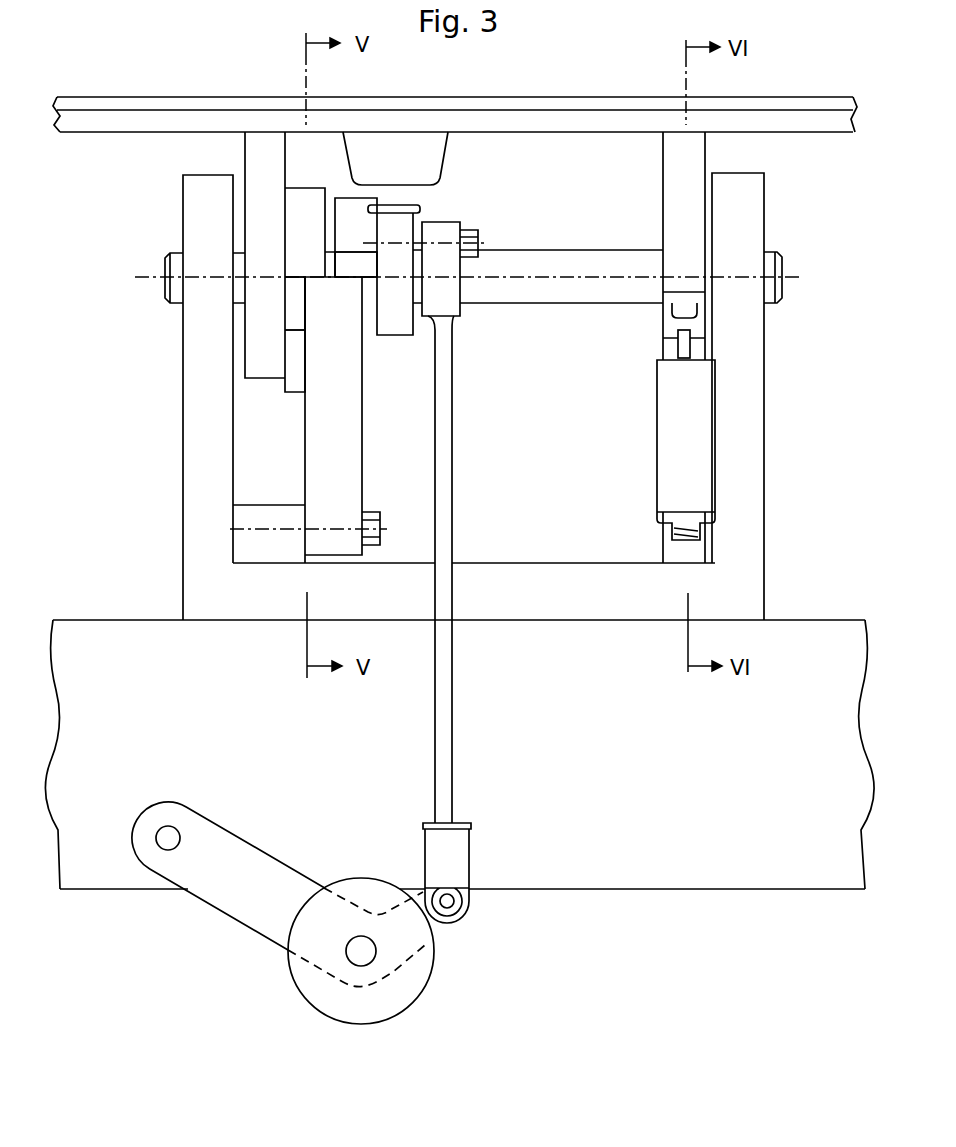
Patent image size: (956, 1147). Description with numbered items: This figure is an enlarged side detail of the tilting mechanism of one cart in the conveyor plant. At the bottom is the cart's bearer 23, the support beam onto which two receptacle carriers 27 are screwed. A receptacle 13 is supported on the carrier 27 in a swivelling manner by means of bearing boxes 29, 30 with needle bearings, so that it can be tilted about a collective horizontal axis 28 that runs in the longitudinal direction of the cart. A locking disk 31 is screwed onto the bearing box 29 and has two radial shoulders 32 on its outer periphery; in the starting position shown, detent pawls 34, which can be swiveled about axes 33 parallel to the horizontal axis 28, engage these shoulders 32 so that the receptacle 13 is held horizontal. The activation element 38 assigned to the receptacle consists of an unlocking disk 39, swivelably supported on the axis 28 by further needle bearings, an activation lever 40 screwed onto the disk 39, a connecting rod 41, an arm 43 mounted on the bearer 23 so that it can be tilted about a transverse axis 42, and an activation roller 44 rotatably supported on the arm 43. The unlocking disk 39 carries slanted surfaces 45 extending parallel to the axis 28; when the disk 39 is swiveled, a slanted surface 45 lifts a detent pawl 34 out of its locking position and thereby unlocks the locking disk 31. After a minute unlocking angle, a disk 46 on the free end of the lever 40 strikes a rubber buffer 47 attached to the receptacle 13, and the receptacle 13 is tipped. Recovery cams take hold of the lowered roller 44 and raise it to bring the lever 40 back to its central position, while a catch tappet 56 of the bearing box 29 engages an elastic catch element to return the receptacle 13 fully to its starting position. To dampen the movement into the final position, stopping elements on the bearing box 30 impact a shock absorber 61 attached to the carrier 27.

The receptacle 13 is at (219, 95).
The bearer 23 is at (675, 867).
The receptacle carrier 27 is at (747, 463).
The horizontal axis 28 is at (177, 293).
The bearing box 29 is at (253, 238).
The bearing box 30 is at (693, 198).
The locking disk 31 is at (293, 200).
The radial shoulder 32 is at (297, 281).
The axis 33 is at (377, 517).
The detent pawl 34 is at (318, 413).
The activation element 38 is at (518, 775).
The unlocking disk 39 is at (345, 215).
The activation lever 40 is at (407, 318).
The connecting rod 41 is at (445, 488).
The transverse axis 42 is at (164, 843).
The arm 43 is at (222, 870).
The activation roller 44 is at (313, 985).
The slanted surface 45 is at (353, 268).
The disk 46 is at (410, 208).
The rubber buffer 47 is at (408, 146).
The catch tappet 56 is at (693, 326).
The shock absorber 61 is at (687, 351).